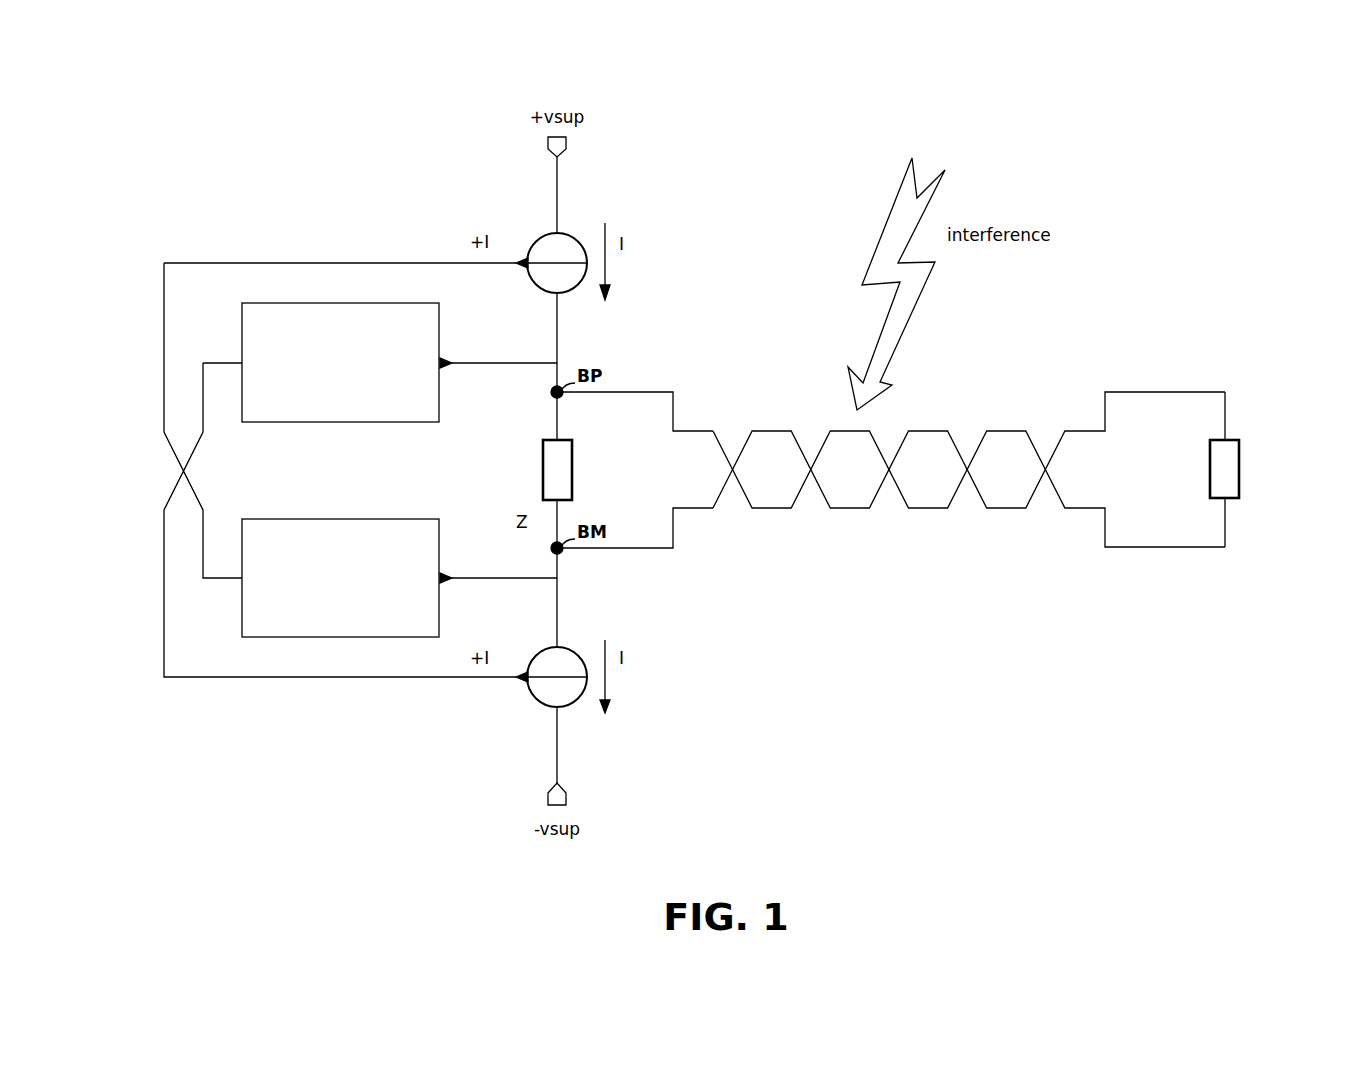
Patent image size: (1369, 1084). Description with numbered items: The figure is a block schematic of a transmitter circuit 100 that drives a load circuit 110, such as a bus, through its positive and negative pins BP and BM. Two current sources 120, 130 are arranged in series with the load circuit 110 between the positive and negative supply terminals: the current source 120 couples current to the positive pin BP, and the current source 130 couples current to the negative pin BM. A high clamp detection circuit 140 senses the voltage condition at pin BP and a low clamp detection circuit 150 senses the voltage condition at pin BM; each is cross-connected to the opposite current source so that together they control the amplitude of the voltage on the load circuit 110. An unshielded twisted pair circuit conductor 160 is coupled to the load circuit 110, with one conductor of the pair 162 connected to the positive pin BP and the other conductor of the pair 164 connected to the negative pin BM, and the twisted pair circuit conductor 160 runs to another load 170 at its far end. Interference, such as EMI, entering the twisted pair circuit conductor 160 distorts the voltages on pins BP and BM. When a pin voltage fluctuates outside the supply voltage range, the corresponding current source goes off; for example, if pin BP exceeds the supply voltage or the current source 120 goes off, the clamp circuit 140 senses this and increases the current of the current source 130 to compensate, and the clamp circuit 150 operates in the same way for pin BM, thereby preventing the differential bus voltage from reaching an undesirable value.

The transmitter circuit 100 is at (1133, 113).
The load circuit 110 is at (566, 440).
The current source 120 is at (559, 232).
The current source 130 is at (559, 647).
The high clamp detection circuit 140 is at (423, 303).
The low clamp detection circuit 150 is at (423, 519).
The unshielded twisted pair circuit conductor 160 is at (1012, 326).
The twisted pair conductor 162 is at (1011, 431).
The twisted pair conductor 164 is at (936, 431).
The load 170 is at (1212, 440).